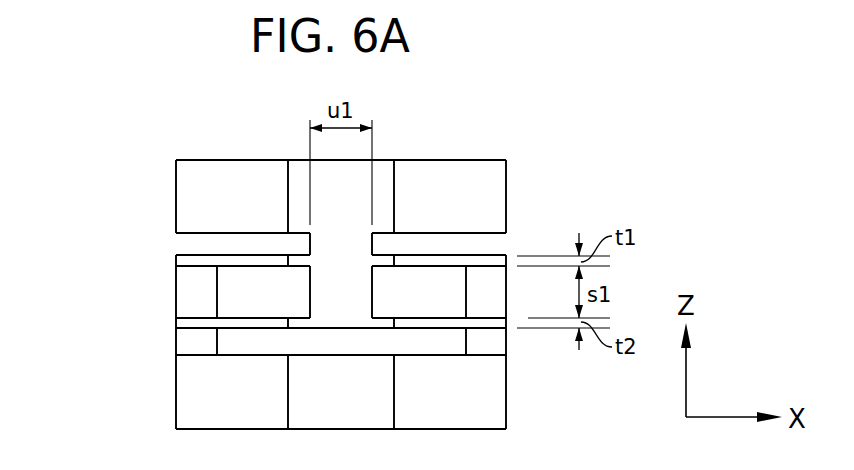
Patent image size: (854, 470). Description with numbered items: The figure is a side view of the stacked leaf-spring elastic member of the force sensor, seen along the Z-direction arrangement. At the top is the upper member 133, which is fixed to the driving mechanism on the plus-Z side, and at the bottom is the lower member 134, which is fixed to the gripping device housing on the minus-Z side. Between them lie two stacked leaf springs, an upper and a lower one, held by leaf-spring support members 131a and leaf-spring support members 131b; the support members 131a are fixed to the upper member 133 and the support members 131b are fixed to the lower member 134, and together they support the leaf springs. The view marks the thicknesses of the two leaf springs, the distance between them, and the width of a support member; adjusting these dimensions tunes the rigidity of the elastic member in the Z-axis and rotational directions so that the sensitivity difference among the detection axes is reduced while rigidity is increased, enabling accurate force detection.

The upper member 133 is at (207, 202).
The leaf-spring support member 131a is at (334, 294).
The leaf-spring support member 131b is at (187, 304).
The lower member 134 is at (193, 383).